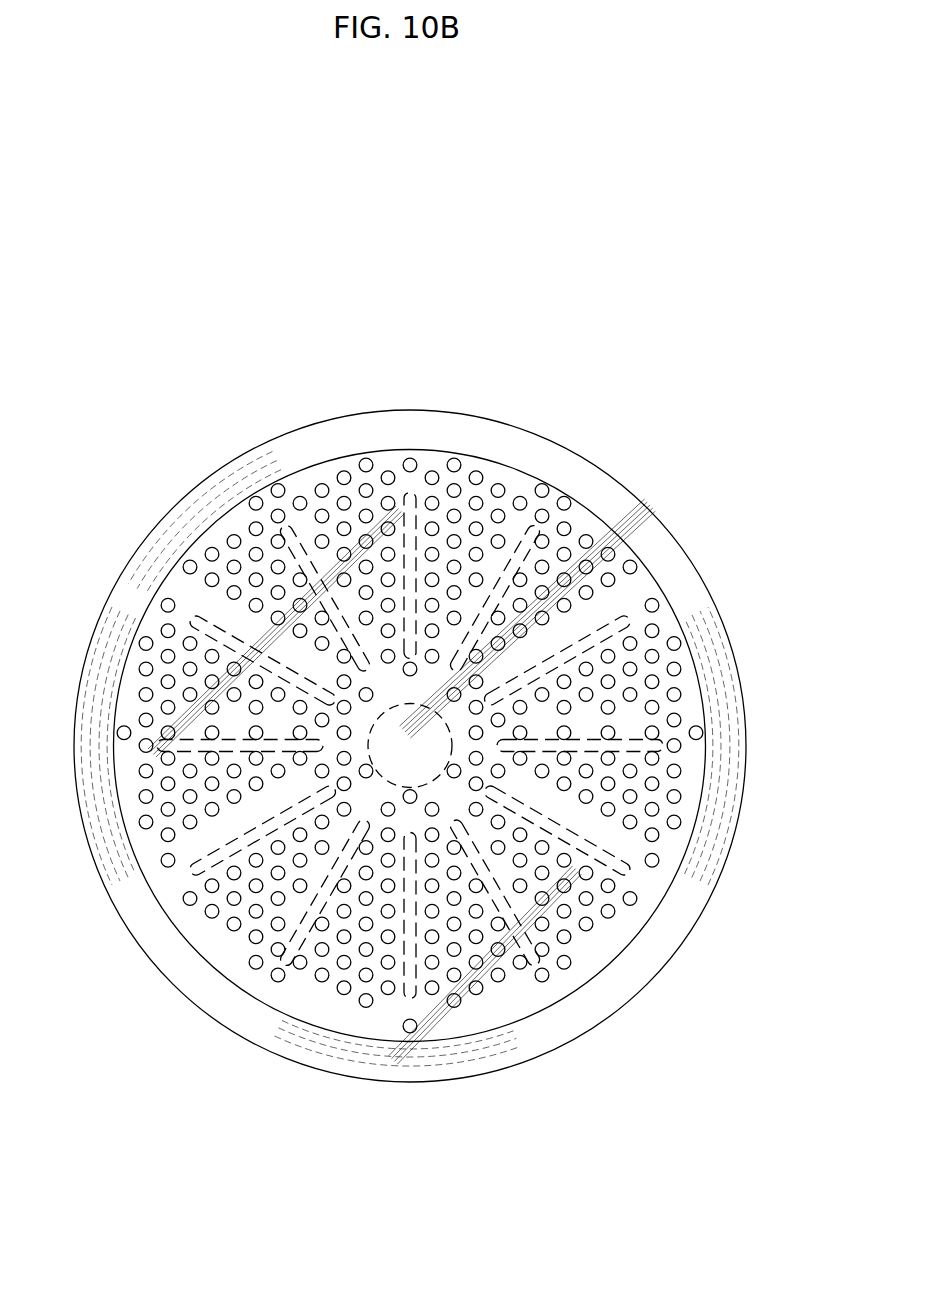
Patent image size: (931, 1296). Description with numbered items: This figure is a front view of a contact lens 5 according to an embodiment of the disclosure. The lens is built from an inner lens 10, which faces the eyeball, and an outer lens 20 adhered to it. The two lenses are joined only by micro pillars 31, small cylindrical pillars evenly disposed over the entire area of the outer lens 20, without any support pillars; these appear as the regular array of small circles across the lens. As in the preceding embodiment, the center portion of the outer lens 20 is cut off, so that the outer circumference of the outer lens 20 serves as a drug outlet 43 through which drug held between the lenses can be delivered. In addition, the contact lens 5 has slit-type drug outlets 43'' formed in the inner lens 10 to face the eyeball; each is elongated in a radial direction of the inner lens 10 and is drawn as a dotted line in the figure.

The contact lens 5 is at (386, 340).
The inner lens 10 is at (683, 945).
The outer lens 20 is at (698, 822).
The micro pillar 31 is at (475, 1013).
The drug outlet 43 is at (401, 815).
The slit-type drug outlet 43'' is at (341, 749).